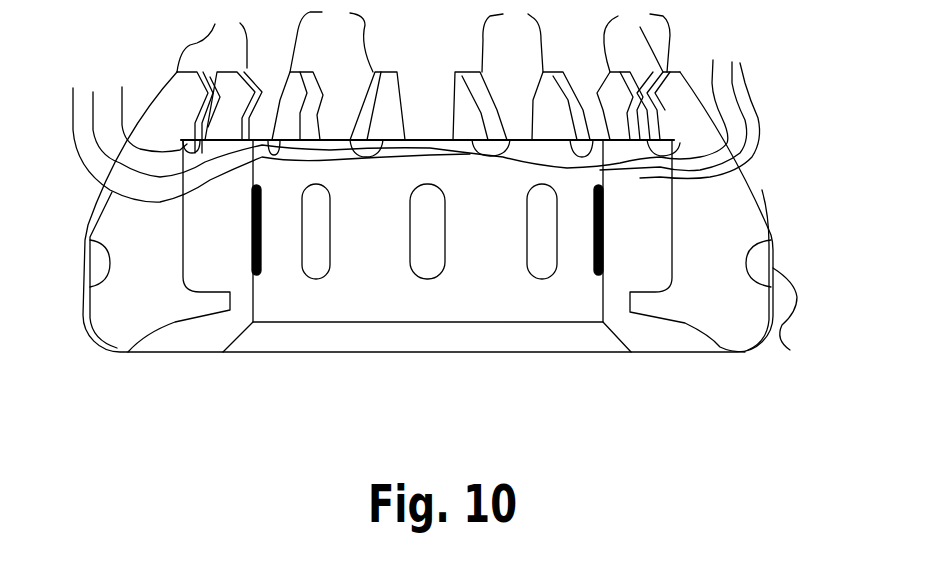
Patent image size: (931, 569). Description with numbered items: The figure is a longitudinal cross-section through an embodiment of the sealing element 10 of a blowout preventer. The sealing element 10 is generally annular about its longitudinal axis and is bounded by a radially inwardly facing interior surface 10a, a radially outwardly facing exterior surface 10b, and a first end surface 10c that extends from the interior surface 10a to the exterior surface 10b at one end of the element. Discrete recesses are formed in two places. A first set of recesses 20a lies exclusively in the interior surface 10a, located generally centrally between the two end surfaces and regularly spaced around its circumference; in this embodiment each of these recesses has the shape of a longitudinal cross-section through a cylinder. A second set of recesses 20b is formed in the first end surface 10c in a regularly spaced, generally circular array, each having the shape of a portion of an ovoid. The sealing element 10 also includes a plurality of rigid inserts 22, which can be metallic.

The sealing element 10 is at (772, 168).
The radially inwardly facing interior surface 10a is at (533, 305).
The radially outwardly facing exterior surface 10b is at (791, 302).
The first end surface 10c is at (427, 140).
The first set of recesses 20a is at (262, 262).
The second set of recesses 20b is at (122, 88).
The rigid inserts 22 is at (428, 78).